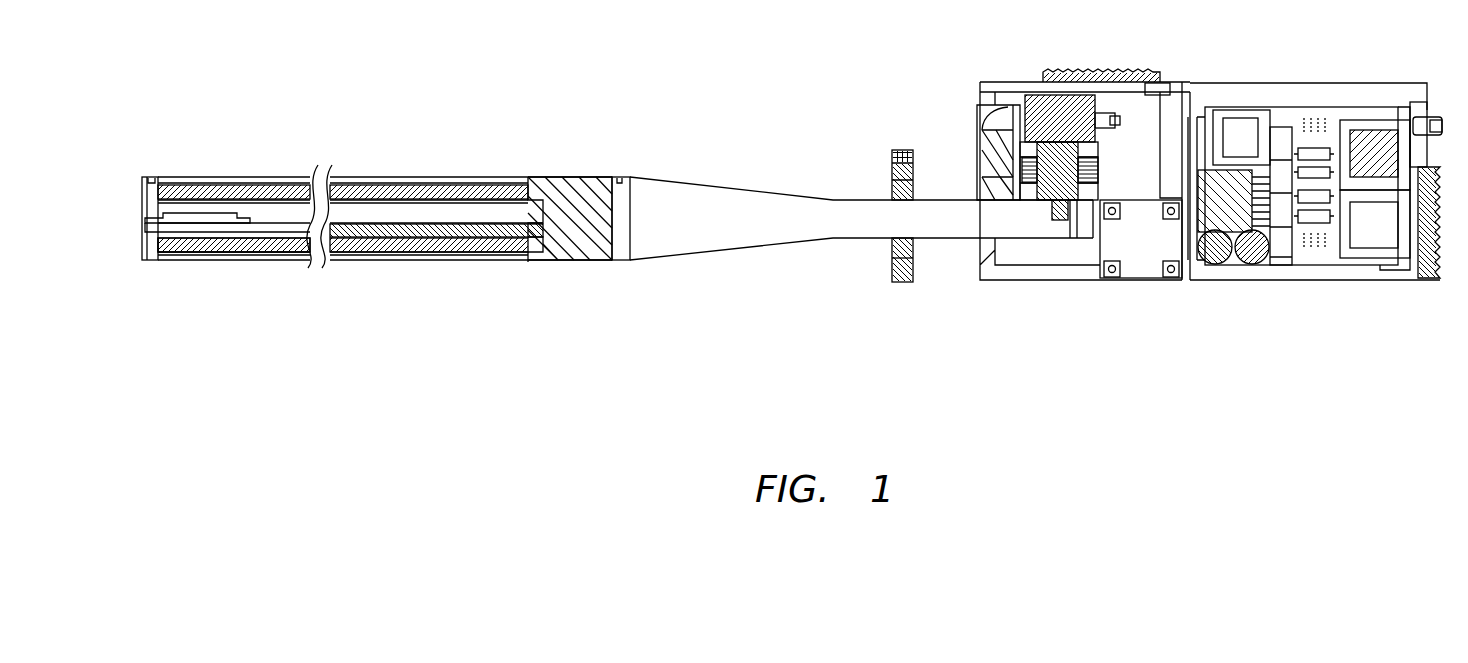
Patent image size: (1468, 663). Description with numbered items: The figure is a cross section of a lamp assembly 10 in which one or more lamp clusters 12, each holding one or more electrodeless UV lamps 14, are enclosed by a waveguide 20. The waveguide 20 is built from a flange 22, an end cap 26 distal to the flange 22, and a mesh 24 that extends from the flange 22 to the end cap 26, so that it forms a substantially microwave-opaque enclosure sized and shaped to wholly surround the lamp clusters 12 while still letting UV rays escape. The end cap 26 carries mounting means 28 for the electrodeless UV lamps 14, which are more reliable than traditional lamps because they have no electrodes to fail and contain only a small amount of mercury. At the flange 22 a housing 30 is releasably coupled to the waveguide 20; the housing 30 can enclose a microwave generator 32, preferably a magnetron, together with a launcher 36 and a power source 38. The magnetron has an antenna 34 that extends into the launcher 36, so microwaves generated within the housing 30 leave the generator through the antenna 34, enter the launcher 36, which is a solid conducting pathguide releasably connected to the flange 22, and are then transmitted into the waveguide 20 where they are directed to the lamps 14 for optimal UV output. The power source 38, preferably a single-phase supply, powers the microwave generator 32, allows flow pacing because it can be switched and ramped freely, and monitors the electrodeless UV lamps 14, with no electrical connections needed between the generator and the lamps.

The lamp assembly 10 is at (297, 118).
The lamp cluster 12 is at (178, 240).
The electrodeless UV lamp 14 is at (278, 215).
The waveguide 20 is at (433, 177).
The flange 22 is at (902, 285).
The mesh 24 is at (557, 262).
The end cap 26 is at (155, 198).
The mounting means 28 is at (147, 227).
The housing 30 is at (997, 280).
The microwave generator 32 is at (1078, 97).
The antenna 34 is at (1058, 220).
The launcher 36 is at (1048, 238).
The power source 38 is at (1280, 107).